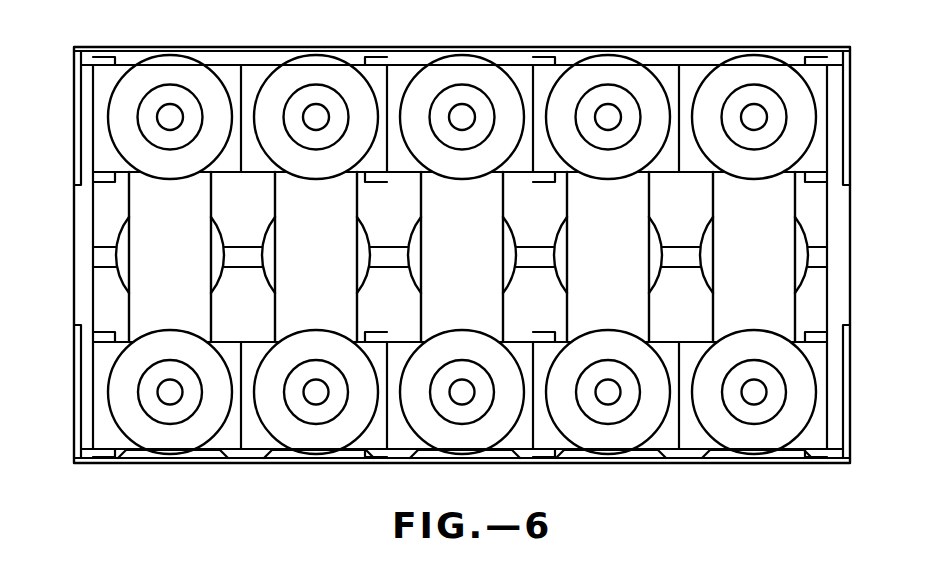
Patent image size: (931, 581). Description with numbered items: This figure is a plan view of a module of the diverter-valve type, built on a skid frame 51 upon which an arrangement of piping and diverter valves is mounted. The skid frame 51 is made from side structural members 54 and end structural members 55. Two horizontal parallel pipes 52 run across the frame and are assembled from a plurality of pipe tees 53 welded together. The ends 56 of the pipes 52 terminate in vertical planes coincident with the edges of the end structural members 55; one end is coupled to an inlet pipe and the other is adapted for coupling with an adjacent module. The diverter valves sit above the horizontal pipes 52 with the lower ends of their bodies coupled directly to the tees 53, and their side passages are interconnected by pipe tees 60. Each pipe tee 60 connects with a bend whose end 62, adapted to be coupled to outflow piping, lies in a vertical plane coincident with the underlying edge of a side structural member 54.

The skid frame 51 is at (415, 0).
The horizontal parallel pipes 52 is at (121, 58).
The pipe tees 53 is at (408, 184).
The side structural members 54 is at (681, 46).
The end structural members 55 is at (313, 46).
The ends of the pipes 56 is at (74, 56).
The pipe tees 60 is at (152, 265).
The end 62 is at (188, 460).